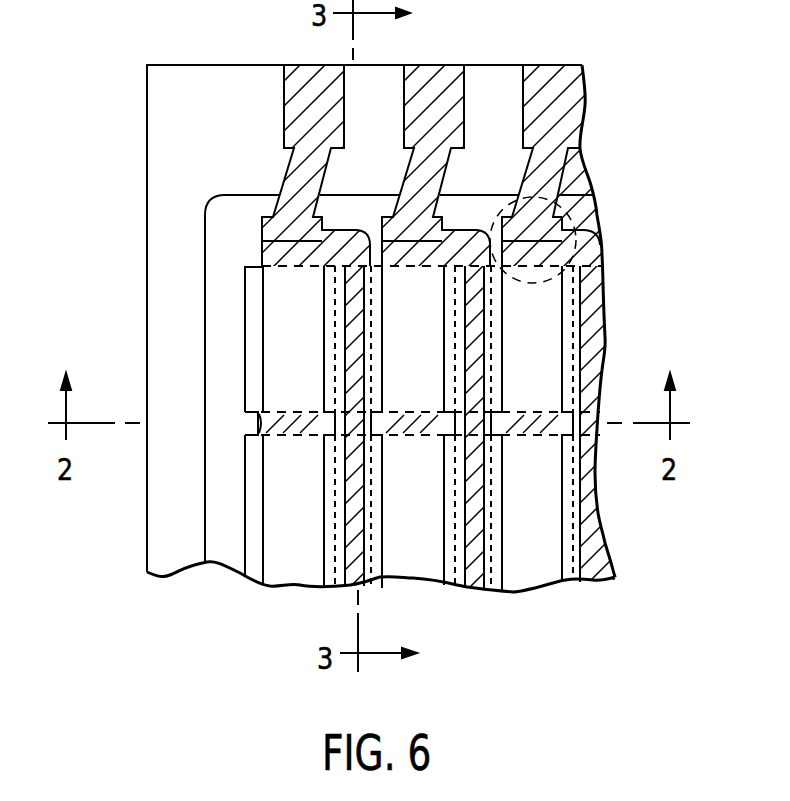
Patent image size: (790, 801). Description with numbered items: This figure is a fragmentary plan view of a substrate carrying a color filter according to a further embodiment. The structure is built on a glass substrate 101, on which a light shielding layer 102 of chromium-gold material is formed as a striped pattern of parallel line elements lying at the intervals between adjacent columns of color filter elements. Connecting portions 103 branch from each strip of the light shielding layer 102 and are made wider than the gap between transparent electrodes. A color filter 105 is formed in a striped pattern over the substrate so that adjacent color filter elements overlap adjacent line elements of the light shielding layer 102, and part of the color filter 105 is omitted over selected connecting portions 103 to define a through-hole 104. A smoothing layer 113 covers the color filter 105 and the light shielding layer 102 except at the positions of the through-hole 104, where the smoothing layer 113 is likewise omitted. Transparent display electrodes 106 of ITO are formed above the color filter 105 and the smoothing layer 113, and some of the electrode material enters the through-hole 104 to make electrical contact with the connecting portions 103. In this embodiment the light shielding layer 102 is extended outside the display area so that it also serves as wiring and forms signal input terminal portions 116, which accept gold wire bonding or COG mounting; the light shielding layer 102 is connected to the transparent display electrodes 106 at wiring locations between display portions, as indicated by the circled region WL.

The glass substrate 101 is at (165, 182).
The light shielding layer 102 is at (478, 590).
The connecting portions 103 is at (297, 410).
The through-hole 104 is at (245, 427).
The color filter 105 is at (255, 503).
The transparent display electrodes 106 is at (275, 288).
The smoothing layer 113 is at (217, 330).
The signal input terminal portions 116 is at (441, 75).
The circled region of wiring location WL is at (605, 219).